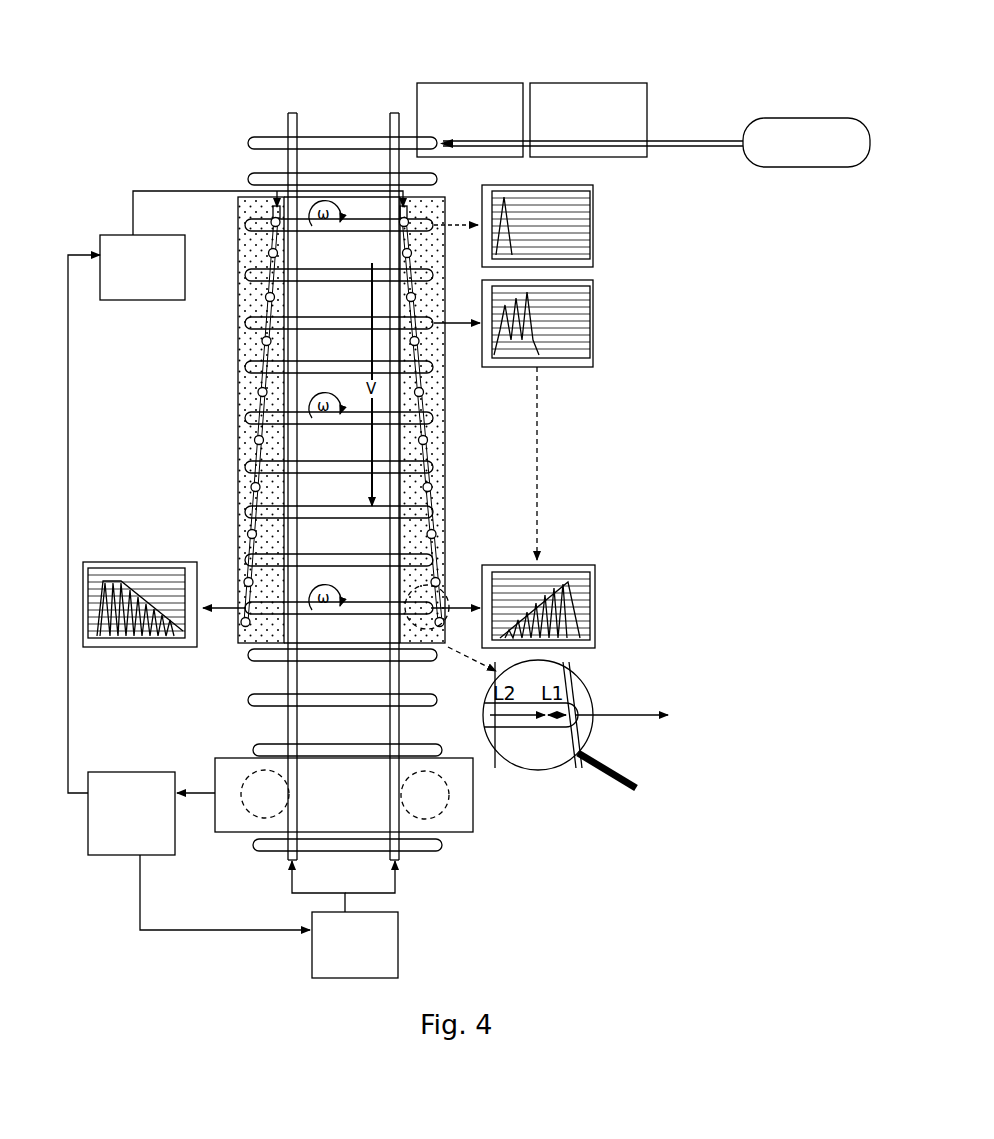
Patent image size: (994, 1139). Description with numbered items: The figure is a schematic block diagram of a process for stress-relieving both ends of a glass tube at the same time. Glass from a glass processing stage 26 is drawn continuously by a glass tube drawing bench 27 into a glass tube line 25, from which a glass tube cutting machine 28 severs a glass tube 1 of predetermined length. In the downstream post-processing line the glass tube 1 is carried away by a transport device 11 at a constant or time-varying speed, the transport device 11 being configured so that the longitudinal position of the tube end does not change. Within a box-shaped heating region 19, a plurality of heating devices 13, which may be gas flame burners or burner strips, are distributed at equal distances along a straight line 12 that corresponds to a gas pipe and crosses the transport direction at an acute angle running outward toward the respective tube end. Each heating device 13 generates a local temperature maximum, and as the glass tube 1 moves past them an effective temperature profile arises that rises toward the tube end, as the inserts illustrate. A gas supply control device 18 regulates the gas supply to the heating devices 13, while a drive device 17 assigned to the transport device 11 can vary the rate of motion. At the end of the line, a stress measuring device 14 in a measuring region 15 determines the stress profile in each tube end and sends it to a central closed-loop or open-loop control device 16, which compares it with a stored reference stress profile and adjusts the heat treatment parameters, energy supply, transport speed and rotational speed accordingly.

The glass tube 1 is at (245, 226).
The transport device 11 is at (284, 120).
The straight line / gas pipe 12 is at (250, 456).
The heating devices 13 is at (260, 392).
The measuring device 14 is at (470, 782).
The measuring region 15 is at (446, 803).
The closed-loop or open-loop control device 16 is at (128, 772).
The drive device 17 is at (398, 922).
The gas supply control device 18 is at (113, 238).
The box-shaped heating region 19 is at (243, 353).
The glass tube line 25 is at (676, 148).
The glass processing 26 is at (808, 118).
The glass tube drawing bench 27 is at (588, 85).
The glass tube cutting machine 28 is at (473, 88).